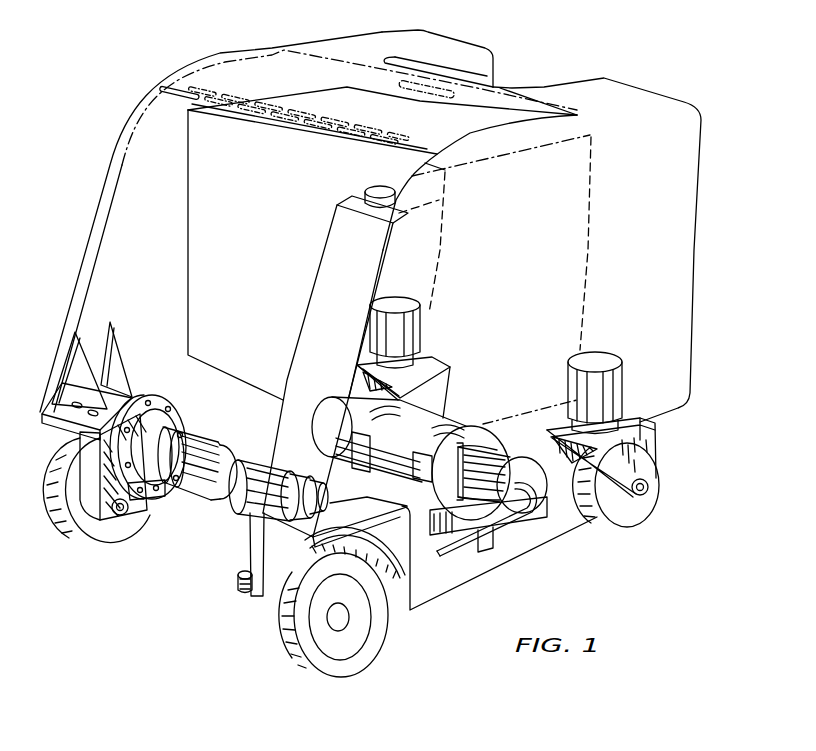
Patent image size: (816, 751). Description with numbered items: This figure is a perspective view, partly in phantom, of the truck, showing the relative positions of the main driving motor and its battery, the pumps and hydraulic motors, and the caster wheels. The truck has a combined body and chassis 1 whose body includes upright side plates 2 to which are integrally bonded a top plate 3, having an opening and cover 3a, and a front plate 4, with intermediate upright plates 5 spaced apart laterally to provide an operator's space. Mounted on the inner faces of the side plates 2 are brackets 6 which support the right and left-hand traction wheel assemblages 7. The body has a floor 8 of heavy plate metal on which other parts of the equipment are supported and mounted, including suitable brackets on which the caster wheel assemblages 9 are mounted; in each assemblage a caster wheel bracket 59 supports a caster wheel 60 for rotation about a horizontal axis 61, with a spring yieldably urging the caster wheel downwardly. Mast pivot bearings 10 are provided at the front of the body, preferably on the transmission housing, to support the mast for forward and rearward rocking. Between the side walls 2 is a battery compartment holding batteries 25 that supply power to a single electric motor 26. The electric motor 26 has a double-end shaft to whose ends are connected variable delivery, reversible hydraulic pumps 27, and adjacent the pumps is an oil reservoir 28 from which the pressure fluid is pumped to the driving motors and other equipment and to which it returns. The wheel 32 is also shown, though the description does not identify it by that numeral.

The combined body and chassis 1 is at (116, 143).
The upright side plates 2 is at (106, 183).
The top plate 3 is at (256, 48).
The cover 3a is at (312, 52).
The front plate 4 is at (187, 205).
The intermediate upright plates 5 is at (500, 64).
The brackets 6 is at (78, 367).
The traction wheel assemblages 7 is at (78, 505).
The floor 8 is at (541, 410).
The caster wheel assemblages 9 is at (418, 333).
The mast pivot bearings 10 is at (118, 515).
The batteries 25 is at (592, 206).
The electric motor 26 is at (437, 413).
The hydraulic pumps 27 is at (312, 440).
The oil reservoir 28 is at (295, 352).
The wheel 32 is at (58, 450).
The caster wheel bracket 59 is at (447, 370).
The caster wheel 60 is at (383, 388).
The horizontal axis 61 is at (648, 486).